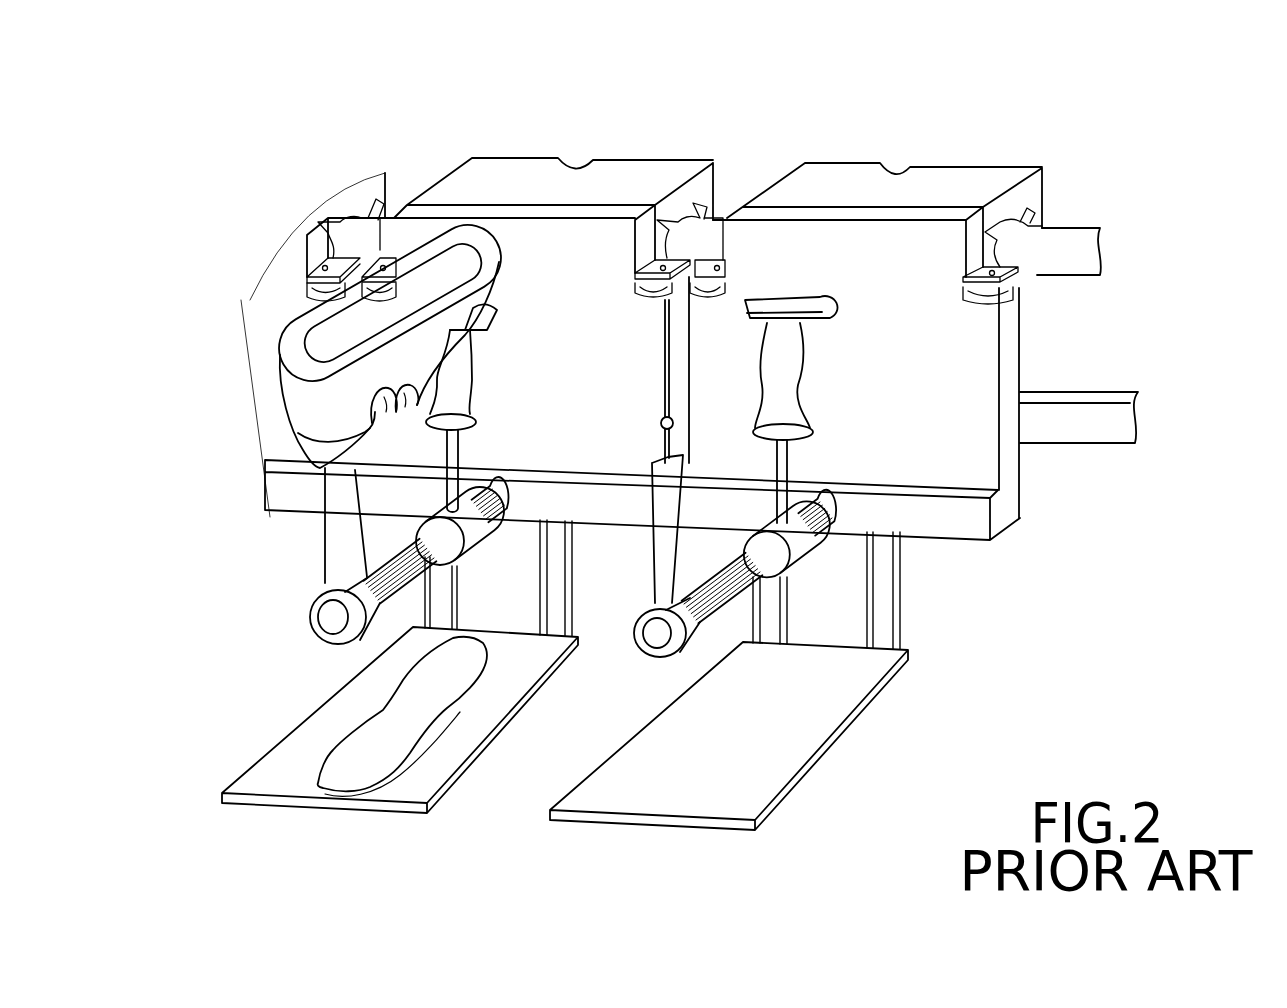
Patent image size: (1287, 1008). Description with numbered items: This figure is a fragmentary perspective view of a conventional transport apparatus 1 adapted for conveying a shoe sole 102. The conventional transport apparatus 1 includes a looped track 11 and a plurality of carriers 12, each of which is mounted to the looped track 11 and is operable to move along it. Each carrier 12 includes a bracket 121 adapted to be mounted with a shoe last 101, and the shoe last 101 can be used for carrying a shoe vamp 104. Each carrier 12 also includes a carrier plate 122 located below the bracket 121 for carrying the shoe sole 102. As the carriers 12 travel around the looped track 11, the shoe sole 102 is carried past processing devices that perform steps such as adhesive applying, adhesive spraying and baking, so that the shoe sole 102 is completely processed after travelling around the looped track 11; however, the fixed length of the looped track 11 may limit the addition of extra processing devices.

The transport apparatus 1 is at (1006, 146).
The looped track 11 is at (1082, 253).
The carrier 12 is at (928, 257).
The bracket 121 is at (463, 378).
The carrier plate 122 is at (463, 740).
The shoe last 101 is at (317, 470).
The shoe sole 102 is at (347, 773).
The shoe vamp 104 is at (302, 402).